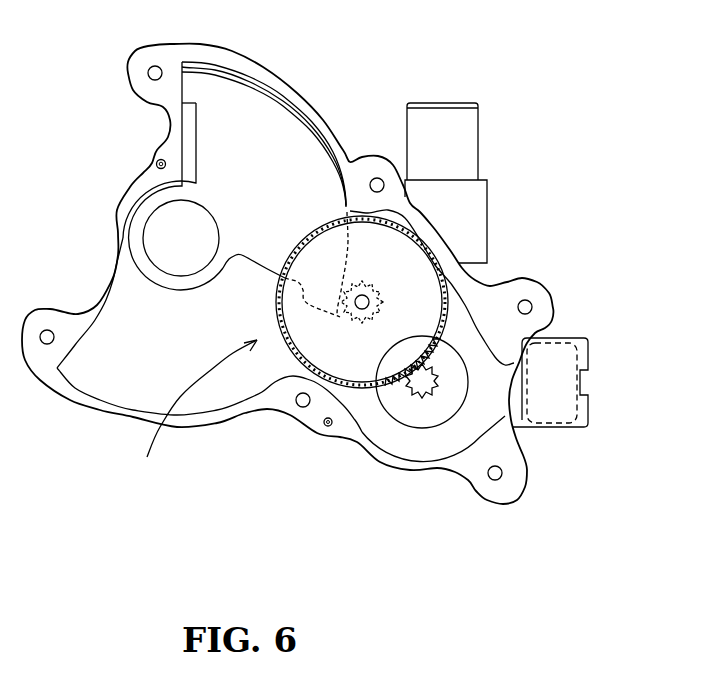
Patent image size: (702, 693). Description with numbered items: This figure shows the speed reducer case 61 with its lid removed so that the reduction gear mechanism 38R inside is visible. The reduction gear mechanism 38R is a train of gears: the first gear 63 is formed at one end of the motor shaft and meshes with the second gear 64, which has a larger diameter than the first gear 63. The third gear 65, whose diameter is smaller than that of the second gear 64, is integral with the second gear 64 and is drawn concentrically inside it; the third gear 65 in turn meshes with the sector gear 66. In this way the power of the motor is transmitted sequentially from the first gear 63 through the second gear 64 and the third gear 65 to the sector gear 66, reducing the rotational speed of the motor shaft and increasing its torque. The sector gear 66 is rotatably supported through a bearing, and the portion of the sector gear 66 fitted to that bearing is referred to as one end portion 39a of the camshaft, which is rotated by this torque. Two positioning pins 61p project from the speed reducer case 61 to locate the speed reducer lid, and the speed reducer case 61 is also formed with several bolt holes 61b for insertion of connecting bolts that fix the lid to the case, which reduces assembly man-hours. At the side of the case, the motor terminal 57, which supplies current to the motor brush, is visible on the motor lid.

The speed reducer case 61 is at (98, 413).
The bolt holes 61b is at (149, 77).
The positioning pins 61p is at (157, 164).
The one end portion of the camshaft 39a is at (147, 232).
The sector gear 66 is at (267, 248).
The second gear 64 is at (287, 340).
The third gear 65 is at (364, 323).
The first gear 63 is at (423, 397).
The motor terminal 57 is at (588, 355).
The reduction gear mechanism 38R is at (191, 413).